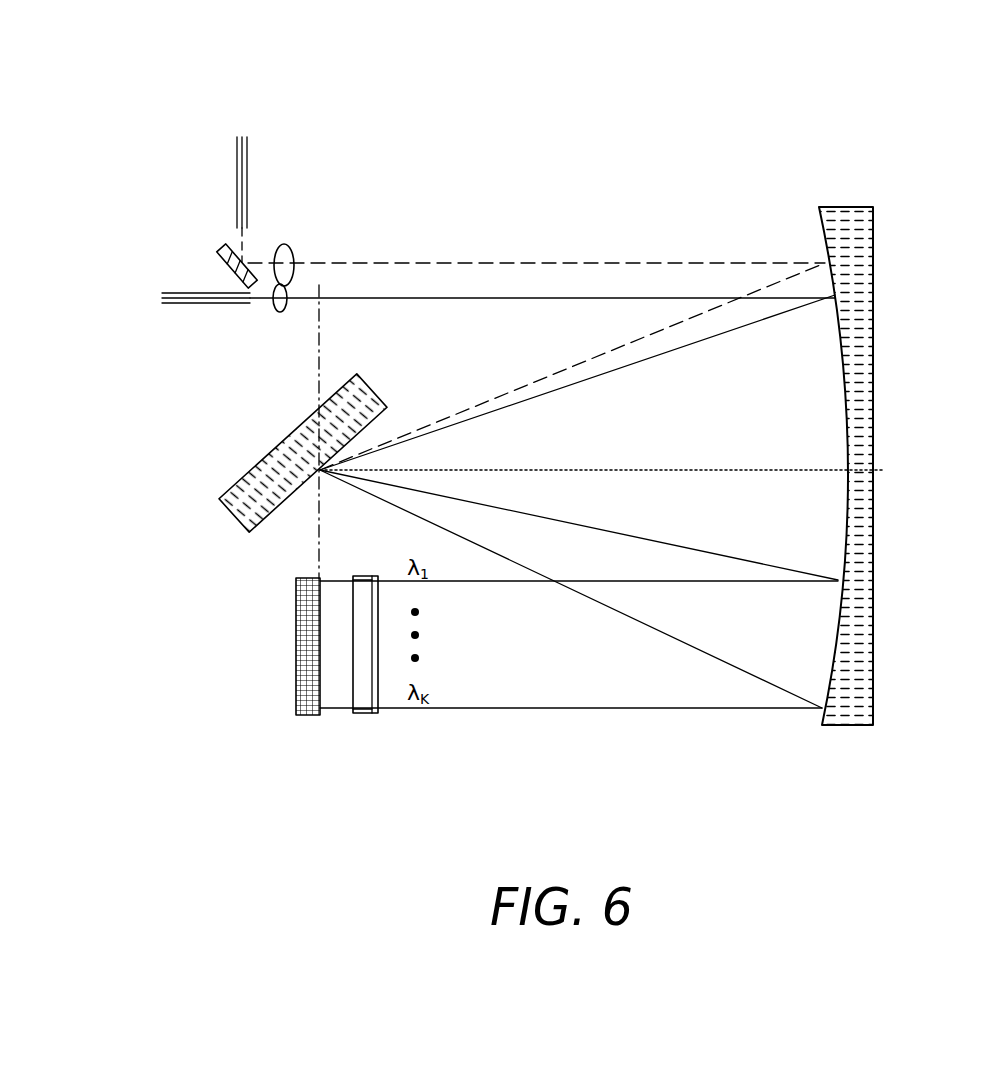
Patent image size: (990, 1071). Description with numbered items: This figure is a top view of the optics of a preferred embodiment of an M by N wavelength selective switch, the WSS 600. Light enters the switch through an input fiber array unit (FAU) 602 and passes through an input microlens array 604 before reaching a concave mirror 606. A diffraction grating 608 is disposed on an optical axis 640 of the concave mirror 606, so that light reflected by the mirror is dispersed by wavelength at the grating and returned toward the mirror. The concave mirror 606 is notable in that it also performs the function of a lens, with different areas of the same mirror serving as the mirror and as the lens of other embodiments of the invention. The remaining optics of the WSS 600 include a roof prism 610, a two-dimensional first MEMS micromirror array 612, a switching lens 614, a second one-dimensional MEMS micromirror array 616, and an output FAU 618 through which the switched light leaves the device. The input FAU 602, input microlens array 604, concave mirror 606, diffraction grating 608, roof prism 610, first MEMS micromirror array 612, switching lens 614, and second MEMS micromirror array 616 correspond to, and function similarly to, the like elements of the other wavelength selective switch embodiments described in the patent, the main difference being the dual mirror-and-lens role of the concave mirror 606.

The M×N WSS 600 is at (721, 63).
The input fiber array unit 602 is at (160, 298).
The input microlens array 604 is at (279, 311).
The concave mirror 606 is at (873, 262).
The diffraction grating 608 is at (255, 468).
The roof prism 610 is at (366, 713).
The two-dimensional first MEMS micromirror array 612 is at (292, 667).
The switching lens 614 is at (293, 252).
The second one-dimensional MEMS micromirror array 616 is at (218, 250).
The output FAU 618 is at (248, 166).
The optical axis 640 is at (773, 470).